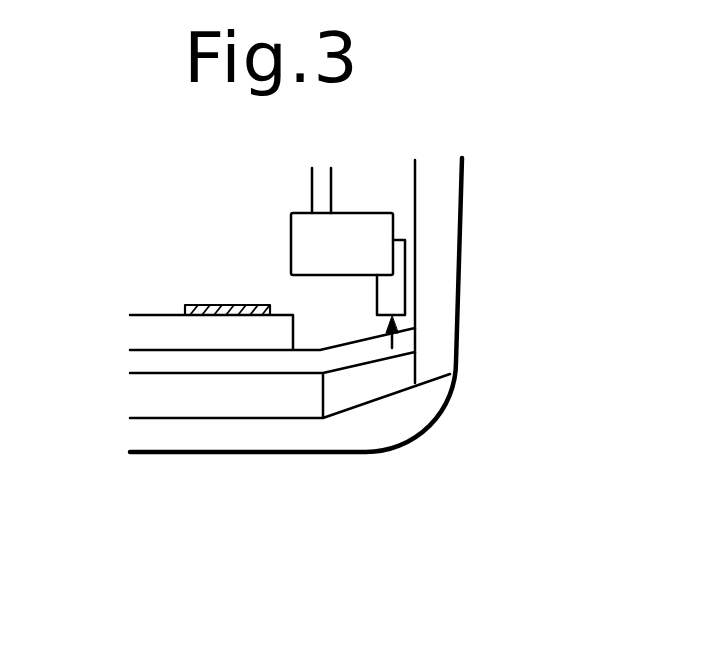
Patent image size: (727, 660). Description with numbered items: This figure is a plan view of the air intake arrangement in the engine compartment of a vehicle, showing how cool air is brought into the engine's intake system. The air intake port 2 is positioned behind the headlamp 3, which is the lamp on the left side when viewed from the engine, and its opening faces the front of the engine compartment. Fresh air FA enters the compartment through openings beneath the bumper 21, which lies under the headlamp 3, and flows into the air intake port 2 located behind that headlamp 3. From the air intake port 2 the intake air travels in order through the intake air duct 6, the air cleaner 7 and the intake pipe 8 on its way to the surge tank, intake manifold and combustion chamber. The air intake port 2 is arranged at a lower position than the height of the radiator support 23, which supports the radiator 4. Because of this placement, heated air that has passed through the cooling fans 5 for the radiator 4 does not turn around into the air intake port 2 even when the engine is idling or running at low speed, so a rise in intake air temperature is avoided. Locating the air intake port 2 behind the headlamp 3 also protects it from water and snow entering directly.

The air intake port 2 is at (407, 310).
The headlamp 3 is at (377, 382).
The radiator 4 is at (162, 315).
The cooling fans 5 is at (222, 305).
The intake air duct 6 is at (407, 267).
The air cleaner 7 is at (363, 213).
The intake pipe 8 is at (310, 185).
The bumper 21 is at (290, 440).
The radiator support 23 is at (207, 363).
The fresh air FA is at (397, 338).